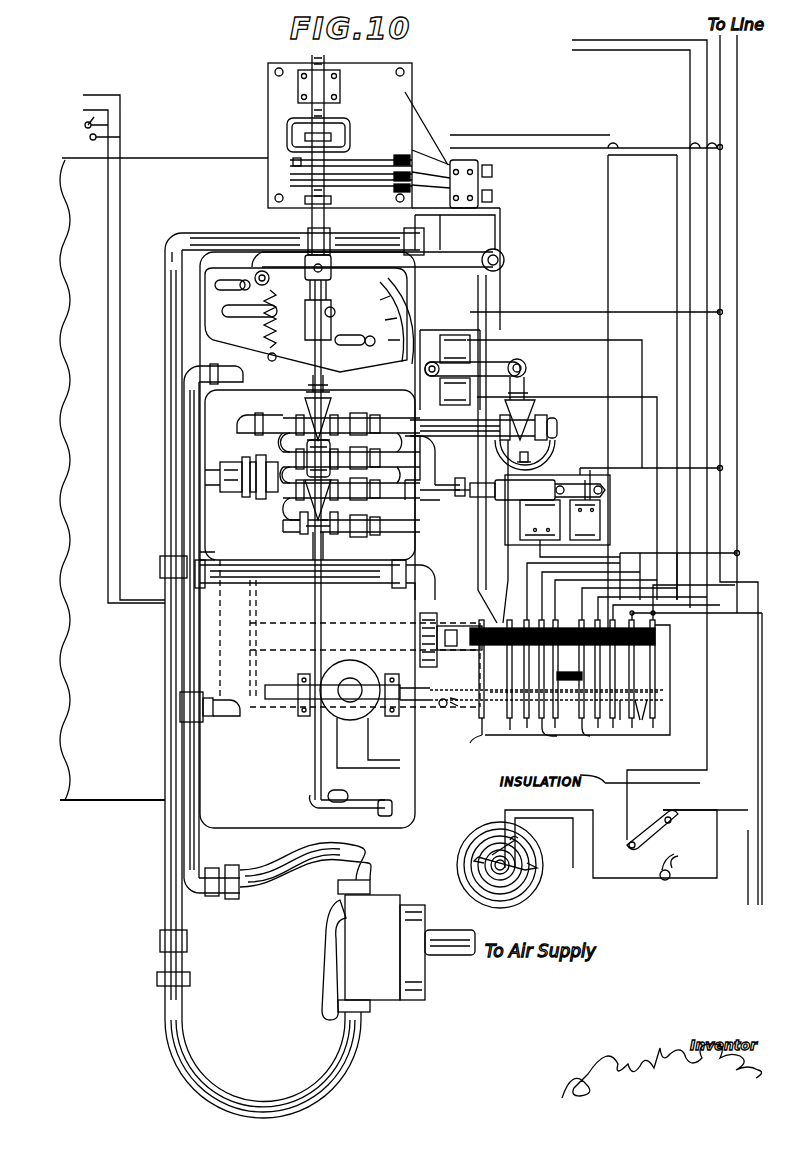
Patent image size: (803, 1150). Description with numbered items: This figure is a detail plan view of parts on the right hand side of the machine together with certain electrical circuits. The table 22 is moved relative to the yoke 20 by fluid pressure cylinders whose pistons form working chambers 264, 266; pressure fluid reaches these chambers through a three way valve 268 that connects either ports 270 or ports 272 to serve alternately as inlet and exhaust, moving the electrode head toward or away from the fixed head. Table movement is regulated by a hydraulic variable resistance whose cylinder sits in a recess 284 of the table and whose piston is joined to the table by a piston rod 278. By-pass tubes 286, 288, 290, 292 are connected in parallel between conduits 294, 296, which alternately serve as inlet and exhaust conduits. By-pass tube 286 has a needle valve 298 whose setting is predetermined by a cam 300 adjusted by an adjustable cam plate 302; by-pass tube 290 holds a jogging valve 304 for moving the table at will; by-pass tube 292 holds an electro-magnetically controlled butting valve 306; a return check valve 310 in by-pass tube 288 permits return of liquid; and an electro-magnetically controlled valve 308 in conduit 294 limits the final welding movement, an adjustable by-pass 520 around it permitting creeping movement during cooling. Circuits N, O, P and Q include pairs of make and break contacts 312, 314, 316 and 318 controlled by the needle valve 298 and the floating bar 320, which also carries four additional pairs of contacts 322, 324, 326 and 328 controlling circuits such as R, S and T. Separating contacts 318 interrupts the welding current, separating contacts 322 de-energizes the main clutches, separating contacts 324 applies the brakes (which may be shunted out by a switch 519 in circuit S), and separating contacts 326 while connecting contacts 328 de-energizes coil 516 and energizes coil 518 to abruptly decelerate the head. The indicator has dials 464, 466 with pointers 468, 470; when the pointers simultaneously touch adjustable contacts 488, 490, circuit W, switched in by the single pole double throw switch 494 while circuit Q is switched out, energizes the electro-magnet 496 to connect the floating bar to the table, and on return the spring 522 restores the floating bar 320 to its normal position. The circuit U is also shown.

The yoke 20 is at (492, 330).
The table 22 is at (172, 167).
The working chamber 264 is at (415, 586).
The working chamber 266 is at (250, 562).
The three way valve 268 is at (345, 975).
The ports 270 is at (400, 241).
The ports 272 is at (235, 377).
The piston rod 278 is at (241, 497).
The recess 284 is at (202, 547).
The by-pass tube 286 is at (338, 420).
The by-pass tube 288 is at (380, 422).
The by-pass tube 290 is at (372, 502).
The by-pass tube 292 is at (400, 545).
The conduit 294 is at (548, 432).
The conduit 296 is at (256, 417).
The needle valve 298 is at (310, 403).
The cam 300 is at (359, 309).
The adjustable cam plate 302 is at (232, 336).
The jogging valve 304 is at (311, 516).
The butting valve 306 is at (444, 496).
The electro-magnetically controlled valve 308 is at (528, 410).
The return check valve 310 is at (300, 455).
The make and break contacts 312 is at (292, 160).
The make and break contacts 314 is at (290, 177).
The make and break contacts 316 is at (584, 720).
The make and break contacts 318 is at (543, 722).
The floating bar 320 is at (374, 712).
The make and break contacts 322 is at (510, 720).
The make and break contacts 324 is at (482, 735).
The make and break contacts 326 is at (650, 720).
The make and break contacts 328 is at (616, 720).
The dial 464 is at (528, 895).
The dial 466 is at (494, 905).
The pointer 468 is at (535, 880).
The pointer 470 is at (470, 888).
The adjustable contact 488 is at (502, 831).
The adjustable contact 490 is at (517, 843).
The single pole double throw switch 494 is at (652, 831).
The electro-magnet 496 is at (340, 712).
The coil 516 is at (470, 353).
The coil 518 is at (470, 390).
The switch 519 is at (85, 128).
The adjustable by-pass 520 is at (530, 468).
The spring 522 is at (463, 712).
The circuit S is at (106, 112).
The circuit R is at (604, 50).
The circuit N is at (611, 232).
The circuit O is at (675, 185).
The relay U is at (642, 355).
The circuit T is at (652, 398).
The circuit P is at (612, 479).
The circuit W is at (668, 848).
The circuit Q is at (748, 898).